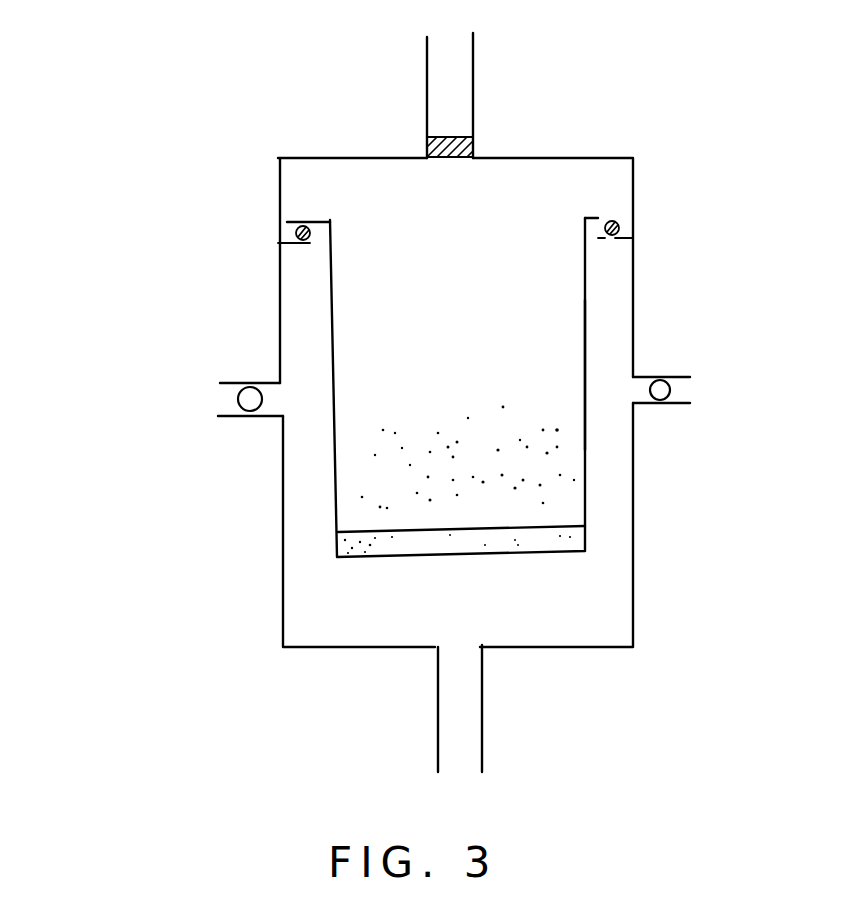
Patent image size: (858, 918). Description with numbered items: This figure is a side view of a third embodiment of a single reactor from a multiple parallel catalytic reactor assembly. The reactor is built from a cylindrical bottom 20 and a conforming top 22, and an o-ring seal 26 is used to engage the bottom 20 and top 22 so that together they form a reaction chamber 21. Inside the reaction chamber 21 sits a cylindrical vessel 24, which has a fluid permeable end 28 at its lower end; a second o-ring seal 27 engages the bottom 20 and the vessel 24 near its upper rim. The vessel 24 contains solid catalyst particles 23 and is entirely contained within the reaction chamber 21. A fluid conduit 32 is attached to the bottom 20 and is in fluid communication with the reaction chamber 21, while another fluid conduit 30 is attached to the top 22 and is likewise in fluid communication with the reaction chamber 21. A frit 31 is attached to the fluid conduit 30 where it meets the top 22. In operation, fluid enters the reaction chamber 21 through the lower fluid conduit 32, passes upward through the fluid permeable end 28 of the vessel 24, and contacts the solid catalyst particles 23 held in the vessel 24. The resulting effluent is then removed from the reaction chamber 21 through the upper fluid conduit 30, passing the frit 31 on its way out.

The cylindrical bottom 20 is at (632, 525).
The reaction chamber 21 is at (385, 338).
The conforming top 22 is at (632, 270).
The solid catalyst particles 23 is at (410, 491).
The cylindrical vessel 24 is at (585, 360).
The o-ring seal 26 is at (670, 392).
The o-ring seal 27 is at (617, 222).
The fluid permeable end 28 is at (563, 538).
The fluid conduit 30 is at (452, 103).
The frit 31 is at (465, 137).
The fluid conduit 32 is at (460, 735).